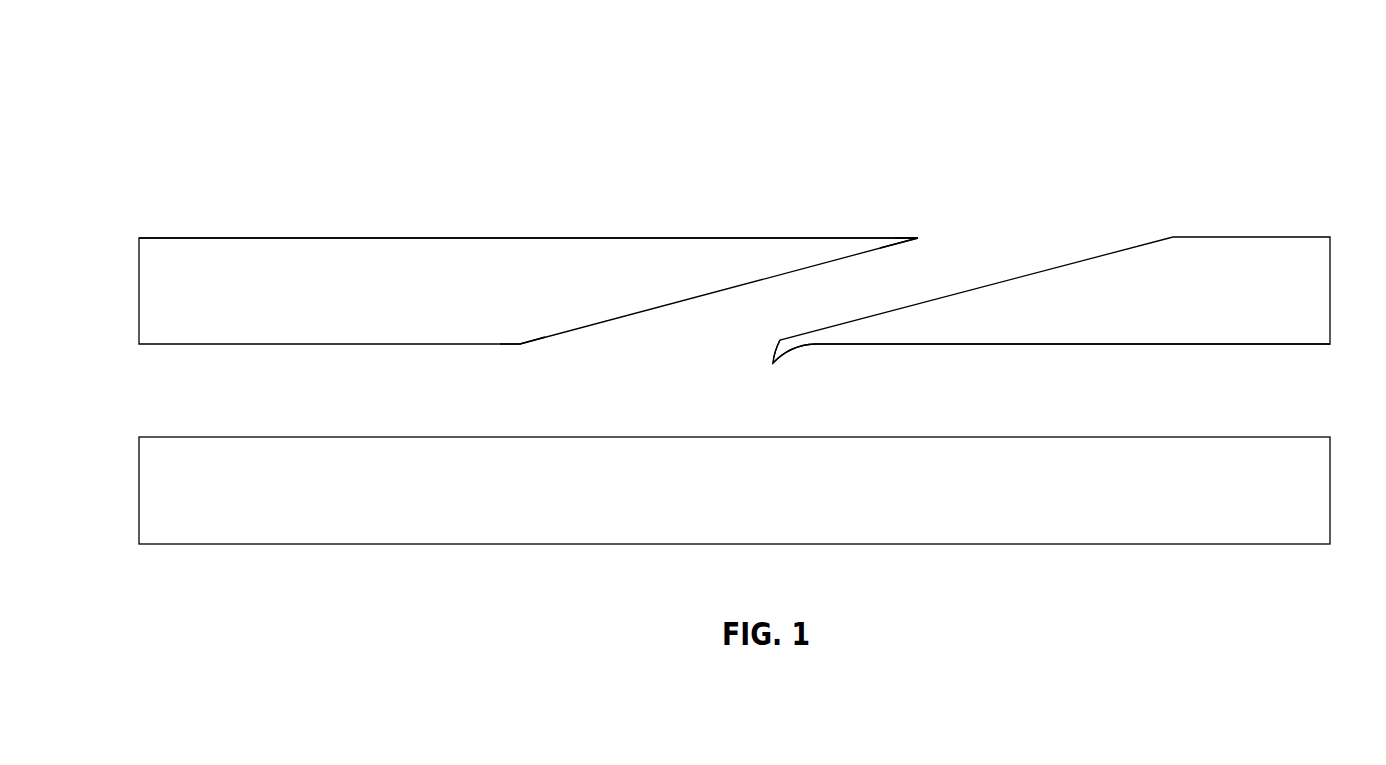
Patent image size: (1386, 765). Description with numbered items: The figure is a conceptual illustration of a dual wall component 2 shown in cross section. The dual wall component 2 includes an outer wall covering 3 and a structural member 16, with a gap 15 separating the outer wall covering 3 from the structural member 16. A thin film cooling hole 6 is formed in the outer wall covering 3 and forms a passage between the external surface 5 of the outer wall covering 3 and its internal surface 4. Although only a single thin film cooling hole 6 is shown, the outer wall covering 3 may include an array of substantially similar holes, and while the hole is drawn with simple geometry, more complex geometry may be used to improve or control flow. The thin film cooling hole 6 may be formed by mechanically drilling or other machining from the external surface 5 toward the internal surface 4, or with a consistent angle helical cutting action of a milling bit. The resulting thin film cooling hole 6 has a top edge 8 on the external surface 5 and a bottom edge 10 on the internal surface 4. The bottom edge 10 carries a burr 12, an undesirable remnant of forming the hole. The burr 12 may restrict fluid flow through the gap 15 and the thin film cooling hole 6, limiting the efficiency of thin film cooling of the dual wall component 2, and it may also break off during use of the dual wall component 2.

The dual wall component 2 is at (217, 126).
The outer wall covering 3 is at (258, 300).
The internal surface 4 is at (914, 353).
The external surface 5 is at (536, 228).
The thin film cooling hole 6 is at (860, 299).
The top edge 8 is at (916, 238).
The bottom edge 10 is at (520, 346).
The burr 12 is at (783, 353).
The gap 15 is at (255, 400).
The structural member 16 is at (247, 505).